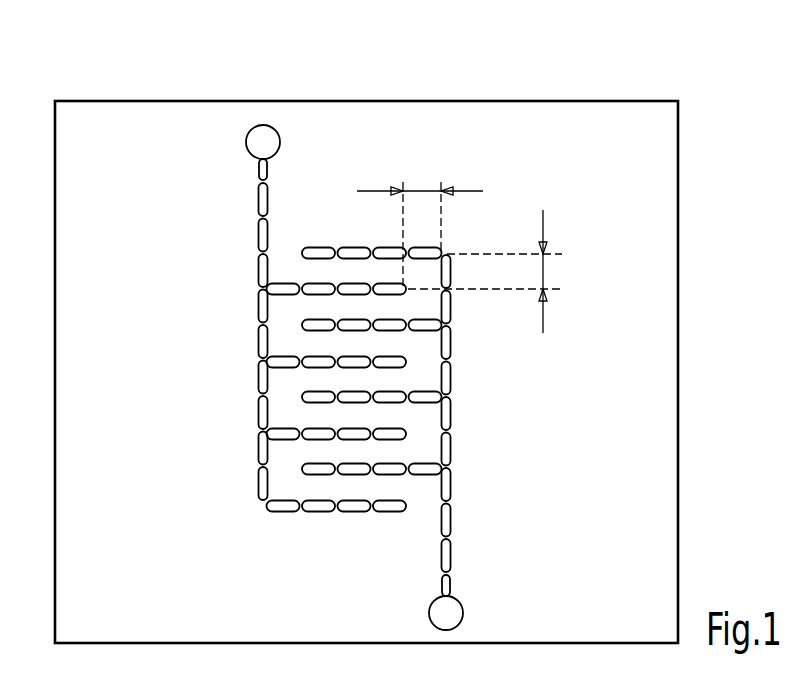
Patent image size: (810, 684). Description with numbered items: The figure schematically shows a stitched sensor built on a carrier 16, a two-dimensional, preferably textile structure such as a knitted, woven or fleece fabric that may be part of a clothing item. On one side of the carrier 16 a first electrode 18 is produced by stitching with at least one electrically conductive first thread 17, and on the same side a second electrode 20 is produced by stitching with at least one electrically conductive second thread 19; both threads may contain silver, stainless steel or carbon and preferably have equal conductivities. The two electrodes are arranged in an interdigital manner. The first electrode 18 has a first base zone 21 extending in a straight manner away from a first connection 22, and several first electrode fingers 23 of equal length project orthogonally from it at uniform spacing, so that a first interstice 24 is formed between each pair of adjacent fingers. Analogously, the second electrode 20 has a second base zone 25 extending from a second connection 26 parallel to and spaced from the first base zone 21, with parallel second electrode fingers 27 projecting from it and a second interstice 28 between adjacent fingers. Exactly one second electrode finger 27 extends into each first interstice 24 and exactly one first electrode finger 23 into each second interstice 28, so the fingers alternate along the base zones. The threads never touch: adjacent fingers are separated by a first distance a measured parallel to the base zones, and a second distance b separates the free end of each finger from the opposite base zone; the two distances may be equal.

The carrier 16 is at (667, 288).
The first thread 17 is at (260, 232).
The first electrode 18 is at (248, 116).
The second thread 19 is at (447, 486).
The second electrode 20 is at (466, 540).
The first base zone 21 is at (257, 524).
The first connection 22 is at (267, 142).
The first electrode fingers 23 is at (282, 270).
The first interstice 24 is at (282, 315).
The second base zone 25 is at (459, 238).
The second connection 26 is at (450, 605).
The second electrode fingers 27 is at (425, 381).
The second interstice 28 is at (420, 305).
The first distance a is at (543, 268).
The second distance b is at (420, 191).